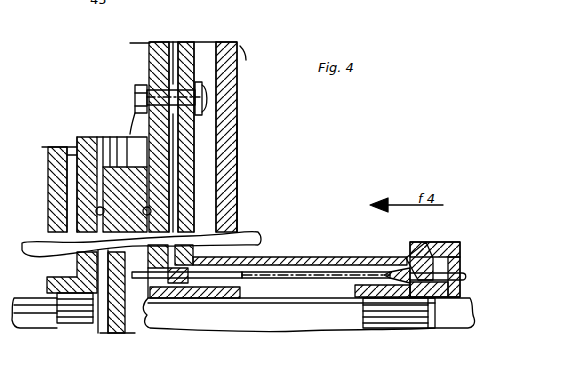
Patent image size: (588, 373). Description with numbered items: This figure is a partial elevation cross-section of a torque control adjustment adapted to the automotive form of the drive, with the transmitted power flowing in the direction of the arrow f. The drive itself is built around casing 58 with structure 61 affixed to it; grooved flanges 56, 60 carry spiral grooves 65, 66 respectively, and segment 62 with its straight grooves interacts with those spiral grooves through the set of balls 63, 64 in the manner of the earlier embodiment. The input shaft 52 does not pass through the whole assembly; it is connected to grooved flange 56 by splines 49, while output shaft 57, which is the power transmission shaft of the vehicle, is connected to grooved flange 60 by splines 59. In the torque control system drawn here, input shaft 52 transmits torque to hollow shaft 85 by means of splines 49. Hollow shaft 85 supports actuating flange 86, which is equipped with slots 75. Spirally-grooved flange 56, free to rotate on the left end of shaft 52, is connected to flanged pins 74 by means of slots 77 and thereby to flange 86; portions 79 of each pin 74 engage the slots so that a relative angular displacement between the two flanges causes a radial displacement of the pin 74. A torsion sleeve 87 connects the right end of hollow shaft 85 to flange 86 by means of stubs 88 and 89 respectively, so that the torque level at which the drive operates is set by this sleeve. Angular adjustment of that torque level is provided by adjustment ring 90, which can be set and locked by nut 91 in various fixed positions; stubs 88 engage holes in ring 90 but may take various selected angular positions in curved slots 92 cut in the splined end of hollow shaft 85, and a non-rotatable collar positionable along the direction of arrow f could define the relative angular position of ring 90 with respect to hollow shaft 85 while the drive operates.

The splines 49 is at (390, 320).
The drive input shaft 52 is at (224, 330).
The grooved flange 56 is at (238, 193).
The output shaft 57 is at (33, 324).
The casing 58 is at (48, 213).
The splines 59 is at (78, 324).
The grooved flange 60 is at (87, 136).
The structure 61 is at (229, 0).
The segment 62 is at (118, 136).
The ball 63 is at (238, 204).
The ball 64 is at (97, 212).
The spiral groove 65 is at (200, 175).
The spiral groove 66 is at (50, 147).
The flanged pin 74 is at (207, 108).
The slot 75 is at (247, 43).
The slot 77 is at (150, 61).
The pin portion 79 is at (185, 74).
The hollow shaft 85 is at (328, 259).
The actuating flange 86 is at (187, 42).
The torsion sleeve 87 is at (286, 274).
The stub 88 is at (461, 259).
The stub 89 is at (134, 279).
The adjustment ring 90 is at (467, 295).
The nut 91 is at (425, 256).
The curved slot 92 is at (406, 258).